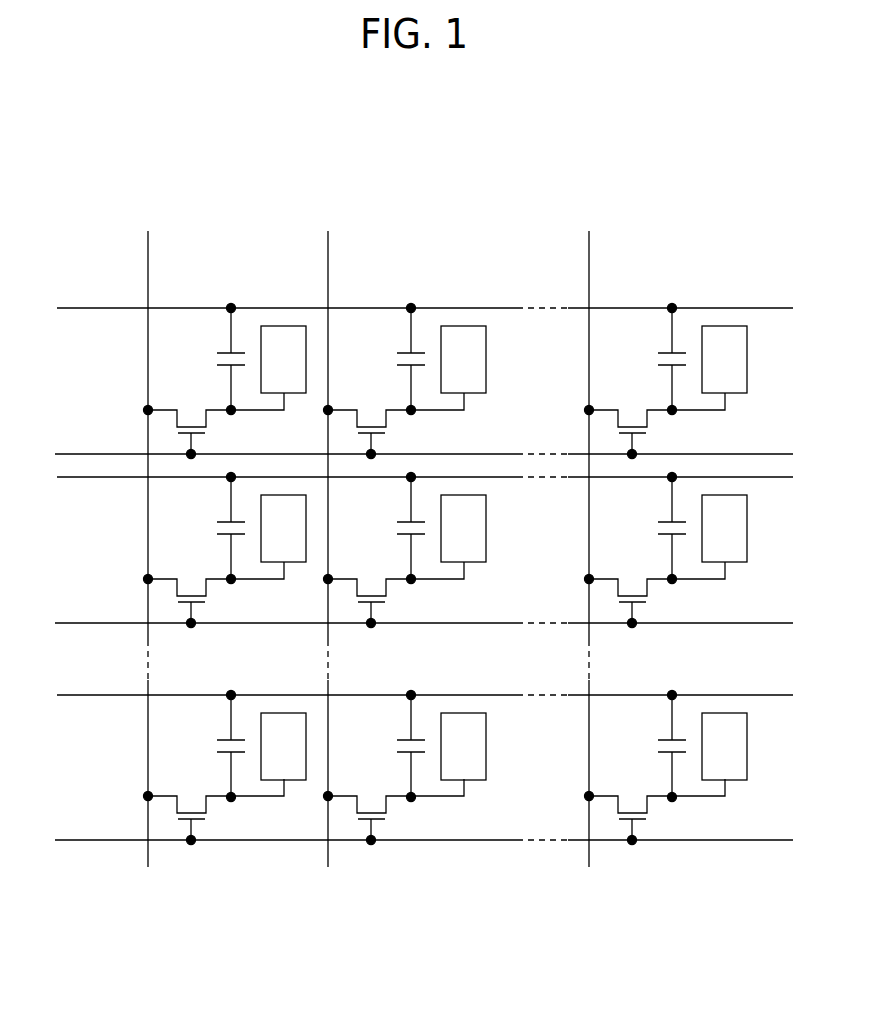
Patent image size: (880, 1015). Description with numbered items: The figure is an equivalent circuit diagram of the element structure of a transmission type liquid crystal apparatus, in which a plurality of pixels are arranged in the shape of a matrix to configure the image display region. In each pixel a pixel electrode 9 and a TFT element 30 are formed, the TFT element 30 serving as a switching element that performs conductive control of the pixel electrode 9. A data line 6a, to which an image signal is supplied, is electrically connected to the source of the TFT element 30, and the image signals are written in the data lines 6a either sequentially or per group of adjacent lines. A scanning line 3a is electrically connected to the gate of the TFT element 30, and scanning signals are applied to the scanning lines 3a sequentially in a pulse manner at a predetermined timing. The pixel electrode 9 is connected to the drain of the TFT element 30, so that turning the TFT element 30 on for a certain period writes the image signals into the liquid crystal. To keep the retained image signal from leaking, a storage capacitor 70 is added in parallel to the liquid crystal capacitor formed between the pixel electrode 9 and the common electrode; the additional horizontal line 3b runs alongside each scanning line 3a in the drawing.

The data line 6a is at (148, 284).
The capacitance line 3b is at (755, 308).
The scanning line 3a is at (760, 454).
The storage capacitor 70 is at (210, 356).
The TFT element 30 is at (216, 433).
The pixel electrode 9 is at (478, 393).